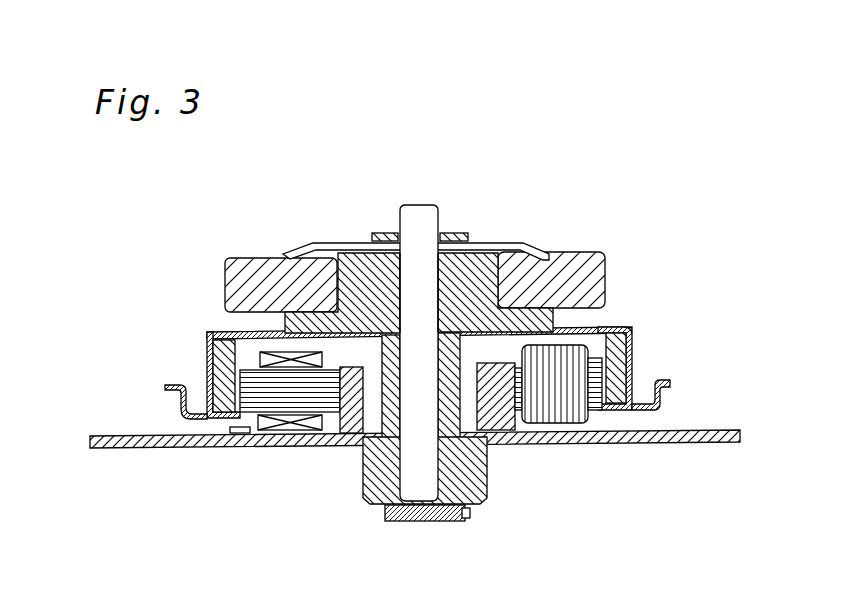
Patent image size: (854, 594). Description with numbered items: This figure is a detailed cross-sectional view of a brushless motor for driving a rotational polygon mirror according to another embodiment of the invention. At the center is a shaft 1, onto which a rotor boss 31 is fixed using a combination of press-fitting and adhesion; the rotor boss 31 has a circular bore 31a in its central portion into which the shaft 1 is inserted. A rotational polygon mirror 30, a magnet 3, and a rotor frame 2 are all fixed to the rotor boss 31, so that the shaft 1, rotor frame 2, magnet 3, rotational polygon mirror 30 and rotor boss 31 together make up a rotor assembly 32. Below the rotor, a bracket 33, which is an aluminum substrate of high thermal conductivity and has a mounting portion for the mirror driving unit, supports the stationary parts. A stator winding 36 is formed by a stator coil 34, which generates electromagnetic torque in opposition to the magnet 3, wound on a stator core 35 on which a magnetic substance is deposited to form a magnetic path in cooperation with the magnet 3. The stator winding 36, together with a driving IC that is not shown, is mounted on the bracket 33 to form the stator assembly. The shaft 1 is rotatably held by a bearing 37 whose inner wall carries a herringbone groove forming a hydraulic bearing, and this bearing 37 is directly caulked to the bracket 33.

The shaft 1 is at (419, 218).
The rotor frame 2 is at (630, 353).
The magnet 3 is at (617, 327).
The rotational polygon mirror 30 is at (580, 272).
The rotor boss 31 is at (484, 262).
The circular bore 31a is at (404, 270).
The rotor assembly 32 is at (400, 148).
The bracket 33 is at (608, 448).
The stator coil 34 is at (210, 372).
The stator core 35 is at (258, 358).
The stator winding 36 is at (342, 313).
The bearing 37 is at (384, 473).